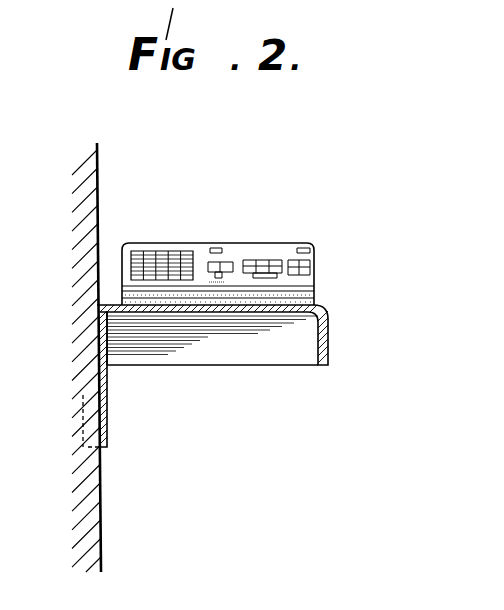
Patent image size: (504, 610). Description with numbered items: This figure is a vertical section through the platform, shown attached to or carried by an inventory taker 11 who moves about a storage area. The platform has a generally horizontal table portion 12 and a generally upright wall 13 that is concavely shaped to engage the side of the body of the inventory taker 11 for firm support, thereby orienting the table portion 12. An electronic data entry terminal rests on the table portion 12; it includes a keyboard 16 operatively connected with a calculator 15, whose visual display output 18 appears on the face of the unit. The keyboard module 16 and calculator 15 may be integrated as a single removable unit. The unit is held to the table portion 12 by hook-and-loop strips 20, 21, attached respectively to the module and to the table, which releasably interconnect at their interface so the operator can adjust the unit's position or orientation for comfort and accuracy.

The inventory taker 11 is at (87, 184).
The table portion 12 is at (335, 301).
The upright wall 13 is at (107, 430).
The calculator 15 is at (320, 263).
The keyboard 16 is at (303, 236).
The visual display output 18 is at (245, 249).
The VELCRO strip 20 is at (135, 294).
The VELCRO strip 21 is at (213, 300).